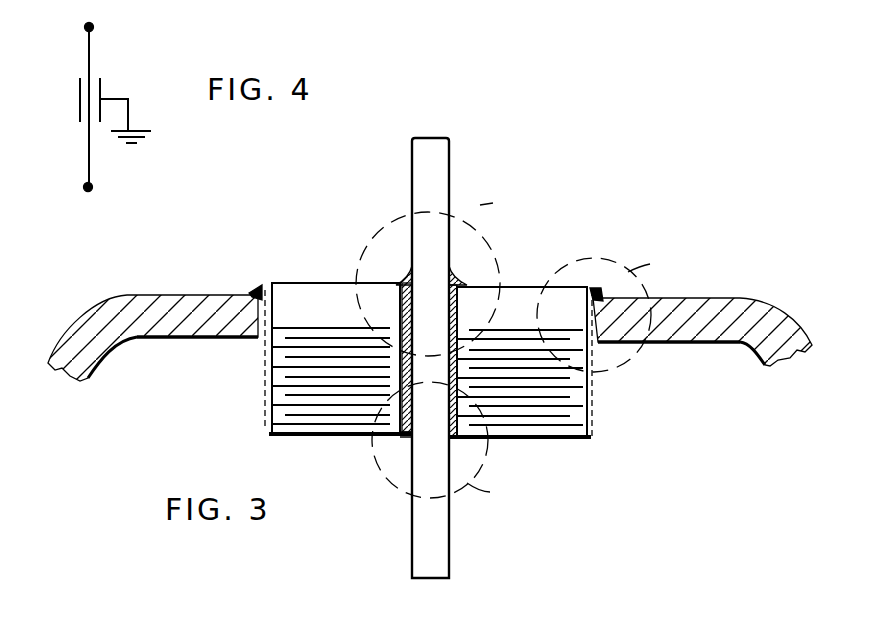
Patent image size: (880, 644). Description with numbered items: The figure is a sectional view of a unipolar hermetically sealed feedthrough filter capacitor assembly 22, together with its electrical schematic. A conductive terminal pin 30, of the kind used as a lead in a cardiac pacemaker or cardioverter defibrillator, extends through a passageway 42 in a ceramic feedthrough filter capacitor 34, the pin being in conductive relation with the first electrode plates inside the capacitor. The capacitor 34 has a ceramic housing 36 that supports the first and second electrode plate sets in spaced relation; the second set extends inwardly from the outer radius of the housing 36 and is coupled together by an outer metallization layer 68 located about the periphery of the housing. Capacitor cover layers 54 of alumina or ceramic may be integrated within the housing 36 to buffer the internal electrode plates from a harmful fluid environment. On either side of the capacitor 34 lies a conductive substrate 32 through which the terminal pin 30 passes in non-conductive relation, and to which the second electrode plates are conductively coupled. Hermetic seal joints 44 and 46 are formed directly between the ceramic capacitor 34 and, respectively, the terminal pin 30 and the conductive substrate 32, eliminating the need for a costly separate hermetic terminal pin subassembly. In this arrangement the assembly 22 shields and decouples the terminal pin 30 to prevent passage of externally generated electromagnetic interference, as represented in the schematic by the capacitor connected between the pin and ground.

In FIG. 3, the feedthrough filter capacitor assembly 22 is at (520, 171).
In FIG. 4, the conductive terminal pin 30 is at (89, 57).
In FIG. 3, the conductive terminal pin 30 is at (450, 541).
In FIG. 3, the conductive substrate 32 is at (757, 302).
In FIG. 3, the ceramic feedthrough filter capacitor 34 is at (325, 441).
In FIG. 3, the ceramic housing 36 is at (325, 283).
In FIG. 3, the passageway 42 is at (408, 438).
In FIG. 3, the hermetic seal joint 44 is at (405, 262).
In FIG. 3, the hermetic seal joint 46 is at (250, 289).
In FIG. 3, the capacitor cover layers 54 is at (518, 285).
In FIG. 3, the outer metallization layer 68 is at (598, 403).